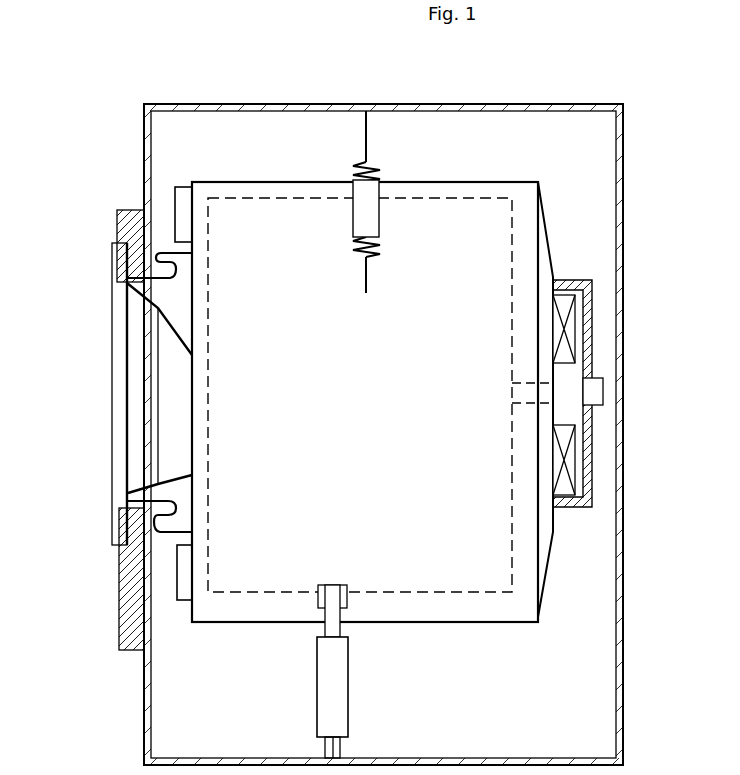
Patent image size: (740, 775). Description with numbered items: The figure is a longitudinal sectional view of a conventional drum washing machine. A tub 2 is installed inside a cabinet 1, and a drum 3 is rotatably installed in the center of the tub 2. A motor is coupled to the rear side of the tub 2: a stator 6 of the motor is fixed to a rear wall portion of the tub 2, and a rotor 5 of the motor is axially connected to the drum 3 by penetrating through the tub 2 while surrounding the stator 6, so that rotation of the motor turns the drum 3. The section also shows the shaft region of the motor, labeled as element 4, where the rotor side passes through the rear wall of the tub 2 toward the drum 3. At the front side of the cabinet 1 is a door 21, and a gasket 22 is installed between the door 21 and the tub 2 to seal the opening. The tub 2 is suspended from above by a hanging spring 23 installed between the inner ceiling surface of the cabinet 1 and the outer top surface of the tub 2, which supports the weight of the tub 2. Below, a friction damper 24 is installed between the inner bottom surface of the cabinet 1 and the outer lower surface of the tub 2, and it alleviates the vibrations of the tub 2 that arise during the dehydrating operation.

The cabinet 1 is at (213, 108).
The tub 2 is at (470, 182).
The drum 3 is at (284, 198).
The rotor shaft 4 is at (568, 392).
The rotor 5 is at (588, 465).
The stator 6 is at (570, 327).
The door 21 is at (117, 403).
The gasket 22 is at (170, 530).
The hanging spring 23 is at (370, 163).
The friction damper 24 is at (335, 690).